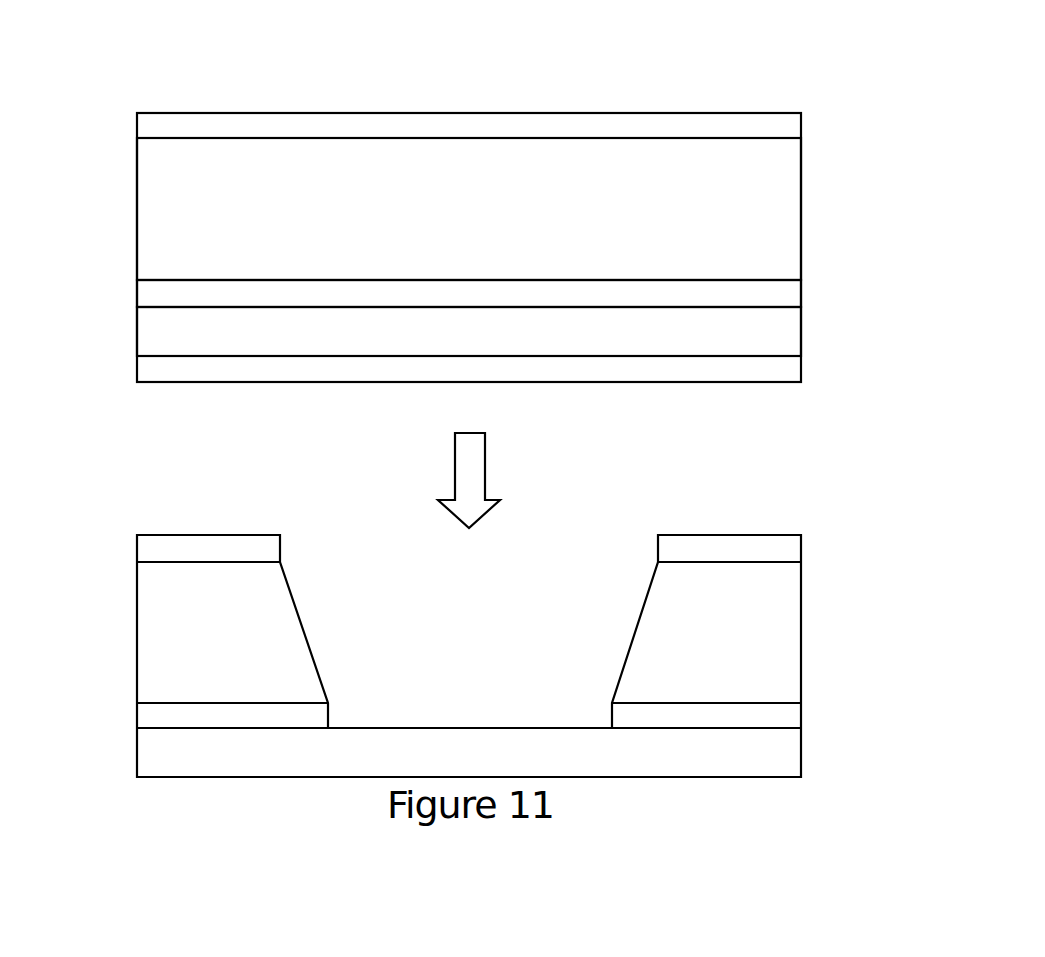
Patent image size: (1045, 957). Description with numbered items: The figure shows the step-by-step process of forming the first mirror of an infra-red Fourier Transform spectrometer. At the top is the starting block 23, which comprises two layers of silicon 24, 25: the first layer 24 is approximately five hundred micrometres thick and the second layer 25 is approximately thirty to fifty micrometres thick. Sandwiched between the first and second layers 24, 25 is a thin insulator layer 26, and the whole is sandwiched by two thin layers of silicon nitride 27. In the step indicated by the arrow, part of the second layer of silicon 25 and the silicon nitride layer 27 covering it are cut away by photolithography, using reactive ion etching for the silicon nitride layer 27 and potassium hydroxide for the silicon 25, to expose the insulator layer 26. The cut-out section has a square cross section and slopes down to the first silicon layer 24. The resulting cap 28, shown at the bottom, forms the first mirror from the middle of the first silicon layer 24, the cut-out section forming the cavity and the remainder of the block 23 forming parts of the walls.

The block 23 is at (473, 220).
The first layer of silicon 24 is at (797, 333).
The second layer of silicon 25 is at (163, 217).
The insulator layer 26 is at (162, 296).
The silicon nitride layer 27 is at (162, 125).
The cap 28 is at (816, 531).